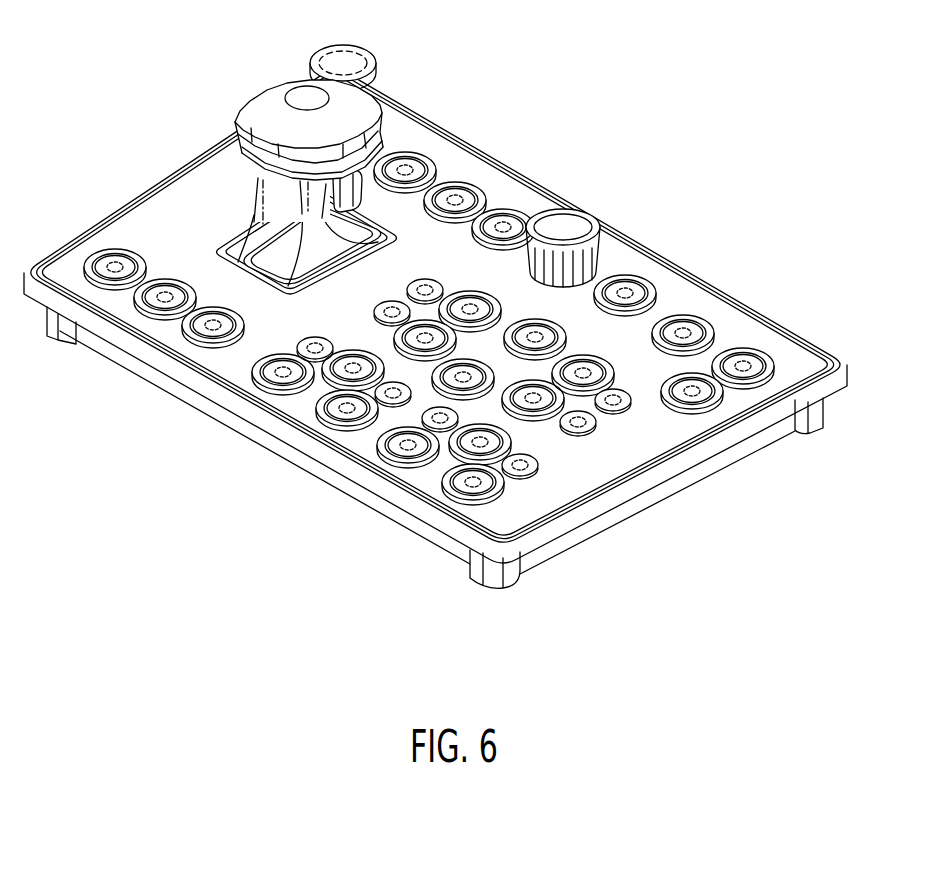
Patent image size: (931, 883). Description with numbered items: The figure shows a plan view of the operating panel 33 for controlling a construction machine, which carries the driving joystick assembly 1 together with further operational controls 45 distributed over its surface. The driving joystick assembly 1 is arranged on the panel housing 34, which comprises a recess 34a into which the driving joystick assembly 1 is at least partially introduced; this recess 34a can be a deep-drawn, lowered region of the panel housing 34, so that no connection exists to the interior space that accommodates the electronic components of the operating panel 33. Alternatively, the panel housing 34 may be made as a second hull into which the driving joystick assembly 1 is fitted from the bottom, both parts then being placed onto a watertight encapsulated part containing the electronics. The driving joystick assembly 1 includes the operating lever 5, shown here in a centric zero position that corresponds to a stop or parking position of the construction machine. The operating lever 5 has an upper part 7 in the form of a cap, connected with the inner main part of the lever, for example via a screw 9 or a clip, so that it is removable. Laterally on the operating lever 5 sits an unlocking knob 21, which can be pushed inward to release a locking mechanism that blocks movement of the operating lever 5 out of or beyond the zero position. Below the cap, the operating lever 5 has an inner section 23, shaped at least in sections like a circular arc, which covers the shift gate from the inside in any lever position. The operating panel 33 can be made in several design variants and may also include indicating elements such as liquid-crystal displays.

The driving joystick assembly 1 is at (435, 328).
The operating lever 5 is at (334, 152).
The upper part 7 is at (303, 95).
The screw 9 is at (305, 100).
The unlocking knob 21 is at (352, 195).
The inner section 23 is at (262, 235).
The operating panel 33 is at (160, 173).
The panel housing 34 is at (157, 207).
The recess 34a is at (107, 223).
The operational controls 45 is at (160, 298).